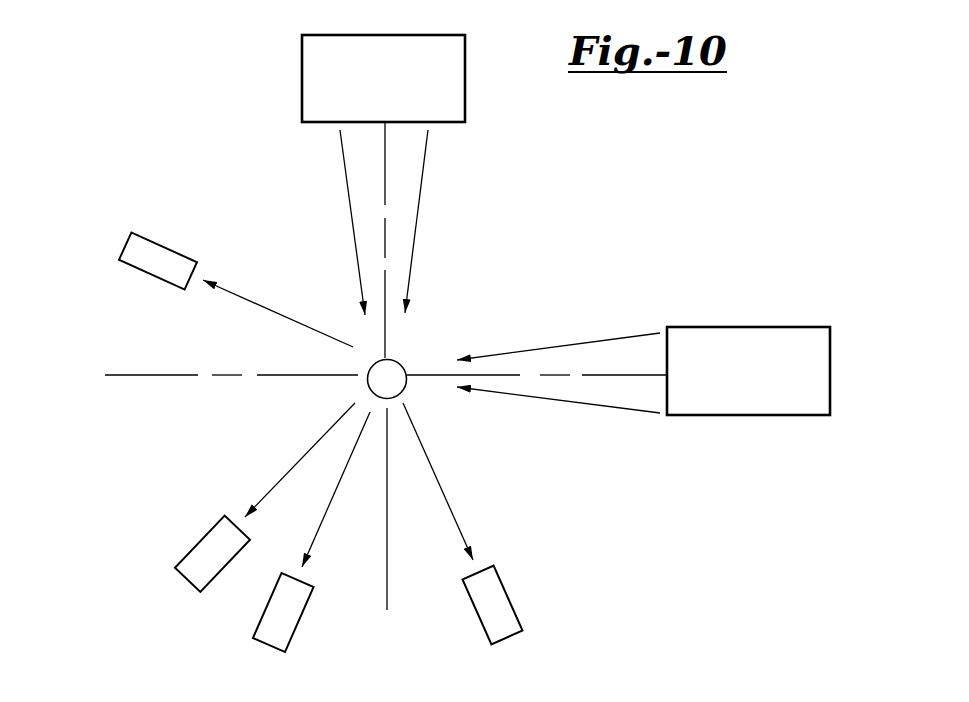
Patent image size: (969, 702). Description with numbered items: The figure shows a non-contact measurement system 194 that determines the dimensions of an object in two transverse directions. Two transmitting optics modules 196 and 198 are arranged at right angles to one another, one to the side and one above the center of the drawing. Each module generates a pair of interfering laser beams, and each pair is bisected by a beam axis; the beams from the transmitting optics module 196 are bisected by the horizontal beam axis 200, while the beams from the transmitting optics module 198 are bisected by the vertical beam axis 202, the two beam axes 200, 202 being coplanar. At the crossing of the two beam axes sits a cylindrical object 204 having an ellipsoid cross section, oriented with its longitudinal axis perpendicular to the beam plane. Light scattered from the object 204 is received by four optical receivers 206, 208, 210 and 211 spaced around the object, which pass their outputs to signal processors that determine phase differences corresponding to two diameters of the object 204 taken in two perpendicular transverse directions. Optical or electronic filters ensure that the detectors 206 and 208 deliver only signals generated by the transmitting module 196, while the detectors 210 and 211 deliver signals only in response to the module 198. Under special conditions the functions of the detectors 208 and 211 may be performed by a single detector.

The measurement system 194 is at (230, 190).
The transmitting optics module 196 is at (768, 327).
The transmitting optics module 198 is at (465, 72).
The beam axis 200 is at (548, 373).
The beam axis 202 is at (385, 175).
The cylindrical object 204 is at (407, 397).
The optical receiver 206 is at (158, 278).
The optical receiver 208 is at (188, 553).
The optical receiver 210 is at (513, 610).
The optical receiver 211 is at (294, 633).